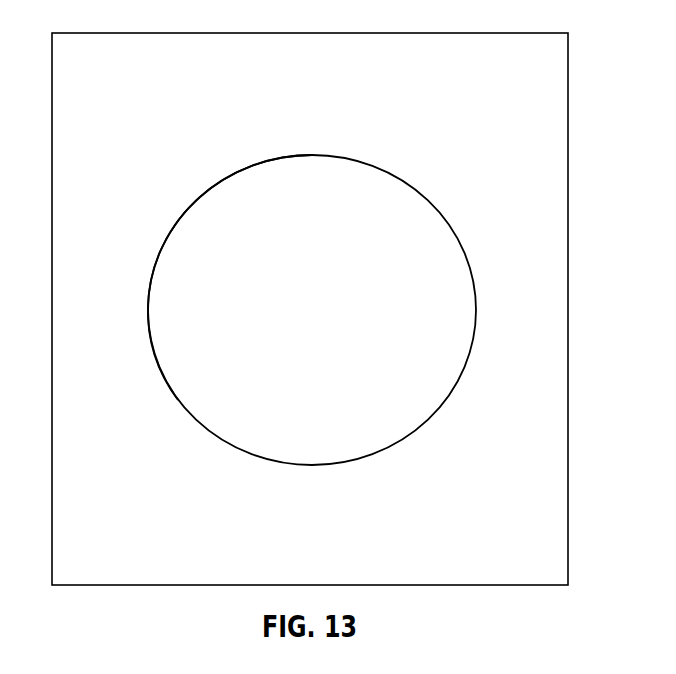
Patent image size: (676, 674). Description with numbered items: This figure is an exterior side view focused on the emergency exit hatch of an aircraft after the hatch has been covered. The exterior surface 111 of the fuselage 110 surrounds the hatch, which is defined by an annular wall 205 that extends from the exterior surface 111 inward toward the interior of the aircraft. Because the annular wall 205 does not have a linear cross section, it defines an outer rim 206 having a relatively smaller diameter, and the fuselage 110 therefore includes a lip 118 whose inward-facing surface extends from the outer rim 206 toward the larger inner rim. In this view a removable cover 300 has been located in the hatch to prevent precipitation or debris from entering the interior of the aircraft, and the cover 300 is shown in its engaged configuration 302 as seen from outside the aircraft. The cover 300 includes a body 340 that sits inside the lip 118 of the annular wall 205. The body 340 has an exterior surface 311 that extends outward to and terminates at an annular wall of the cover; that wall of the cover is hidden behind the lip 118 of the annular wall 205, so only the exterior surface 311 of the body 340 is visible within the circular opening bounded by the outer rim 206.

The fuselage 110 is at (115, 33).
The exterior surface 111 is at (110, 80).
The engaged configuration 302 is at (233, 148).
The annular wall 205 is at (200, 197).
The outer rim 206 is at (148, 305).
The lip 118 is at (177, 403).
The exterior surface 311 is at (370, 246).
The removable cover 300 is at (333, 322).
The body 340 is at (377, 382).